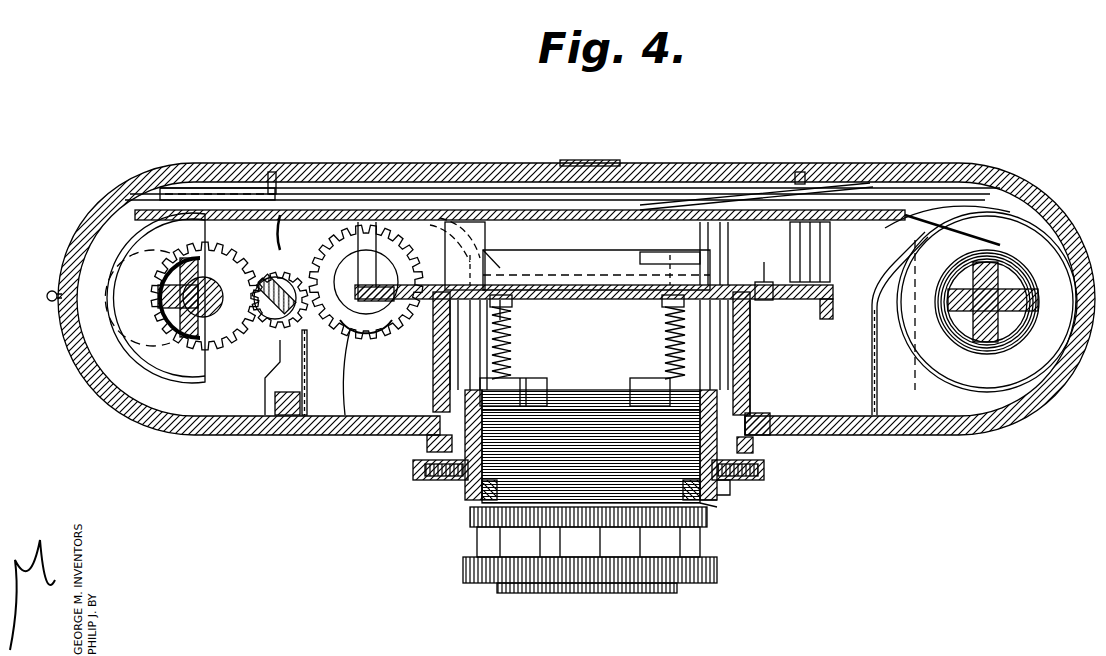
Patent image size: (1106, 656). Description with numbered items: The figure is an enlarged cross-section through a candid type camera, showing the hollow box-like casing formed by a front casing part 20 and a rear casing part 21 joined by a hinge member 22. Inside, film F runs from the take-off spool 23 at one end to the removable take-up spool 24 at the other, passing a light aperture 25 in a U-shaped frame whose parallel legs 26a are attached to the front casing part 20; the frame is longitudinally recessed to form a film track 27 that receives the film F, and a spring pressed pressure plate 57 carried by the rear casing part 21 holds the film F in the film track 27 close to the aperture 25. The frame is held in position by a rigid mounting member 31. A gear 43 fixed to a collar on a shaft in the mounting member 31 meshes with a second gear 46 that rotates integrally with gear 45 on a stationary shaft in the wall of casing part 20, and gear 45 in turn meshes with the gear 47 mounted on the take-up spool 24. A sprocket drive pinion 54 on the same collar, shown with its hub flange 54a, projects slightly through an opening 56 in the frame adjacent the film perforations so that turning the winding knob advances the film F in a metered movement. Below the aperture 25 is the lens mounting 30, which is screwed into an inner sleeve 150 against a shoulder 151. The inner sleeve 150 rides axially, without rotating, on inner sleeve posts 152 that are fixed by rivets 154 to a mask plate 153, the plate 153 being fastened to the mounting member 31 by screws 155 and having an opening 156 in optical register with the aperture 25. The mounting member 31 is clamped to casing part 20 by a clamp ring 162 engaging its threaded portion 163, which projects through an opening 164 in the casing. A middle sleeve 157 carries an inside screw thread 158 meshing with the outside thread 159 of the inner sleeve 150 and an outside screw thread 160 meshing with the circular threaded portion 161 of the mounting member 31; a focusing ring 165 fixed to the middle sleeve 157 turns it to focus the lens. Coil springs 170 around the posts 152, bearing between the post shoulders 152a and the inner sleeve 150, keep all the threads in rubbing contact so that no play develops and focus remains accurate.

The front casing part 20 is at (905, 435).
The rear casing part 21 is at (318, 164).
The hinge member 22 is at (49, 293).
The take-off spool 23 is at (1007, 367).
The take-up spool 24 is at (152, 357).
The light aperture 25 is at (648, 210).
The frame legs 26a is at (307, 386).
The film track 27 is at (770, 223).
The lens mounting 30 is at (455, 562).
The mounting member 31 is at (752, 365).
The gear 43 is at (345, 437).
The gear 45 is at (266, 333).
The second gear 46 is at (282, 415).
The gear 47 is at (215, 352).
The sprocket drive pinion 54 is at (341, 318).
The gear hub flange 54a is at (376, 338).
The opening 56 is at (447, 216).
The pressure plate 57 is at (808, 210).
The film F is at (975, 240).
The inner sleeve 150 is at (612, 378).
The shoulder 151 is at (470, 512).
The inner sleeve posts 152 is at (662, 300).
The shoulder 152a is at (503, 316).
The mask plate 153 is at (745, 330).
The rivets 154 is at (468, 256).
The screws 155 is at (765, 305).
The opening 156 is at (571, 285).
The middle sleeve 157 is at (468, 484).
The screw thread 158 is at (508, 418).
The outside thread 159 is at (706, 503).
The screw thread 160 is at (418, 480).
The circular threaded portion 161 is at (715, 487).
The clamp ring 162 is at (427, 444).
The threaded portion 163 is at (780, 436).
The opening 164 is at (722, 485).
The focusing ring 165 is at (765, 472).
The coil springs 170 is at (512, 355).